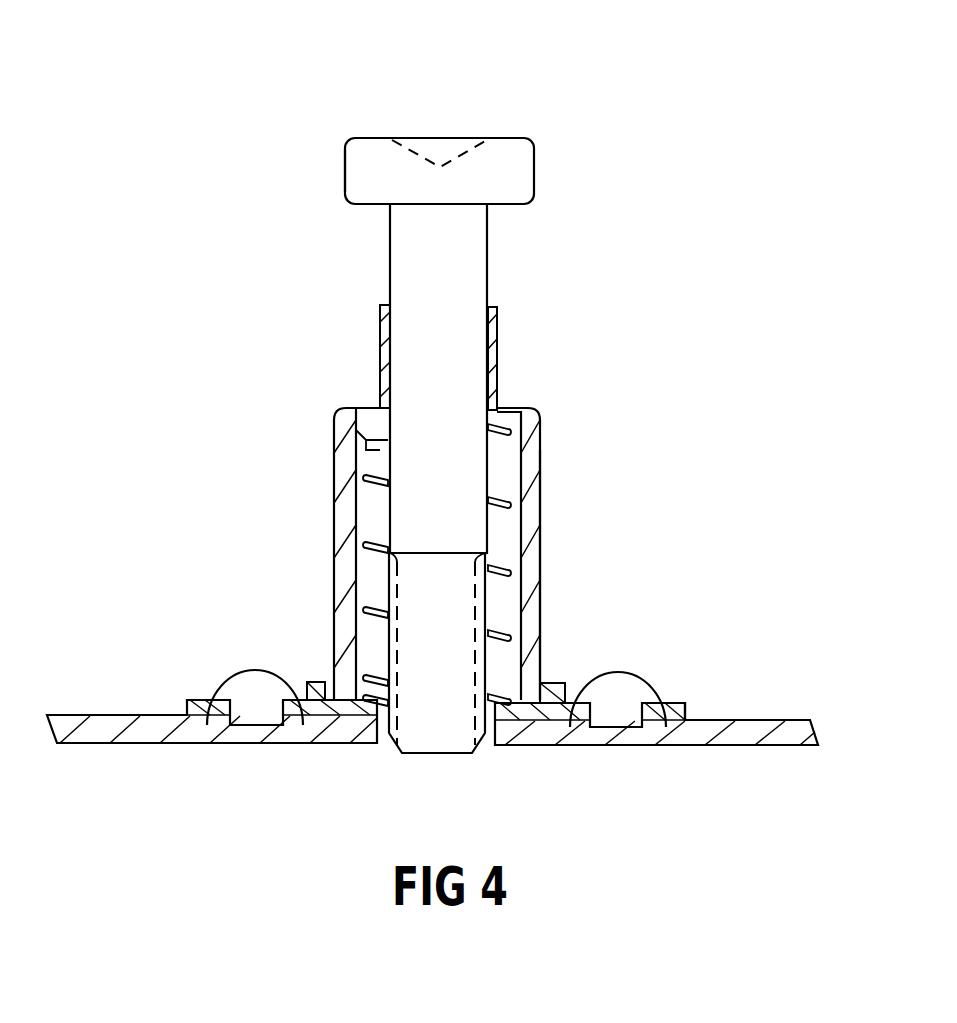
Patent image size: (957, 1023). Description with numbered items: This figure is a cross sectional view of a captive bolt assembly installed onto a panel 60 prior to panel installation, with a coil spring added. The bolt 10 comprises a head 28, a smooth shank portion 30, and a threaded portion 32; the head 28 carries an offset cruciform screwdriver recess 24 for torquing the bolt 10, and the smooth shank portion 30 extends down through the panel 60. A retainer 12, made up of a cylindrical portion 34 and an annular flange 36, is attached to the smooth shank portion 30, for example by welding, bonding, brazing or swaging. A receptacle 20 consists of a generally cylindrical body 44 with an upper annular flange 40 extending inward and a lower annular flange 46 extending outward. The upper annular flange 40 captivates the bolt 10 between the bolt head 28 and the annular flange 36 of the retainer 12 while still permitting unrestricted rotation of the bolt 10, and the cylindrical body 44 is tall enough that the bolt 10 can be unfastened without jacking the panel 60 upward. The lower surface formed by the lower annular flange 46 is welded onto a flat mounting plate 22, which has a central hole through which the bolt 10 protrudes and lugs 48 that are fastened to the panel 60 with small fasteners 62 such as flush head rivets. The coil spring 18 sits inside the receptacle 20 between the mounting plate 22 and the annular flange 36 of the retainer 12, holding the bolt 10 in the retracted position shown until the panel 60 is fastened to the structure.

The bolt 10 is at (530, 138).
The retainer 12 is at (383, 307).
The spring 18 is at (508, 500).
The receptacle 20 is at (333, 540).
The mounting plate 22 is at (330, 682).
The screwdriver recess 24 is at (470, 150).
The head 28 is at (345, 155).
The smooth shank portion 30 is at (490, 262).
The threaded portion 32 is at (492, 612).
The cylindrical portion 34 is at (380, 360).
The annular flange 36 is at (358, 448).
The upper annular flange 40 is at (508, 405).
The cylindrical body 44 is at (542, 557).
The lower annular flange 46 is at (555, 690).
The lugs 48 is at (675, 703).
The panel 60 is at (763, 720).
The small fasteners 62 is at (240, 670).